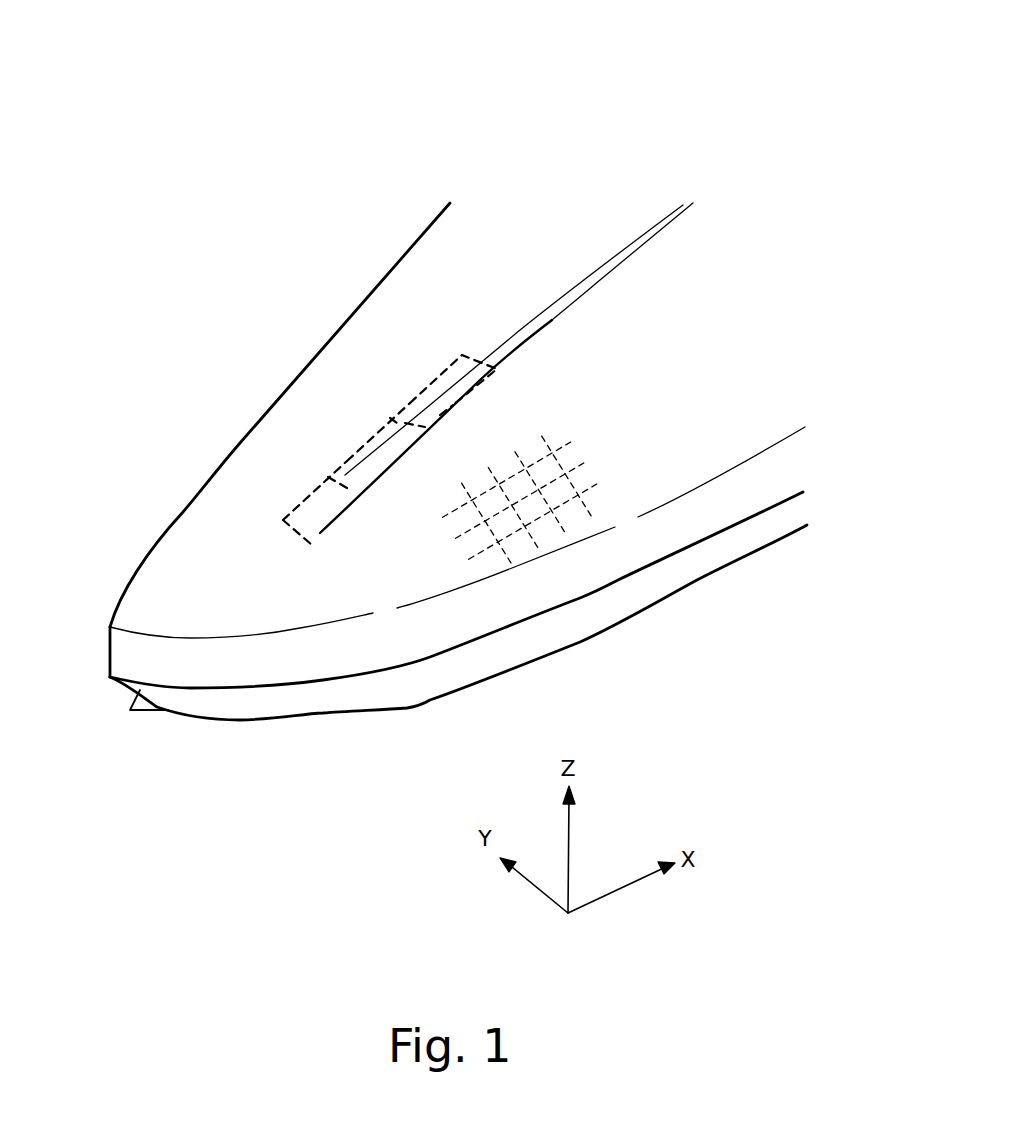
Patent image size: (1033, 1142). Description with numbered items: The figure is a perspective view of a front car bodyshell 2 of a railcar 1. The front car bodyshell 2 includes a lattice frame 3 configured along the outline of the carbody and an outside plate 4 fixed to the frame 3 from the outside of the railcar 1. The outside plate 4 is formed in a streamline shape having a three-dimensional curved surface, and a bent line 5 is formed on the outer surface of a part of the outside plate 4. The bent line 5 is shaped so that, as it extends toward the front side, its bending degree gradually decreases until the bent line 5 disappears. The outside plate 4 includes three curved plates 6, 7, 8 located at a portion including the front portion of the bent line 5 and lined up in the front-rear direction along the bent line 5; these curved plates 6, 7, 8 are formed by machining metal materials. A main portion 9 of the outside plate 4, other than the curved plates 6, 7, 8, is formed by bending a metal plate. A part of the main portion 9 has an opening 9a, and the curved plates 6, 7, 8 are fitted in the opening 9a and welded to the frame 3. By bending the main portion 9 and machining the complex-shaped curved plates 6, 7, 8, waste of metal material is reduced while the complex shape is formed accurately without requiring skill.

The railcar 1 is at (417, 199).
The front car bodyshell 2 is at (140, 567).
The lattice frame 3 is at (502, 555).
The outside plate 4 is at (192, 527).
The bent line 5 is at (545, 313).
The curved plate 6 is at (305, 500).
The curved plate 7 is at (358, 450).
The curved plate 8 is at (432, 380).
The main portion 9 is at (410, 288).
The opening 9a is at (325, 530).